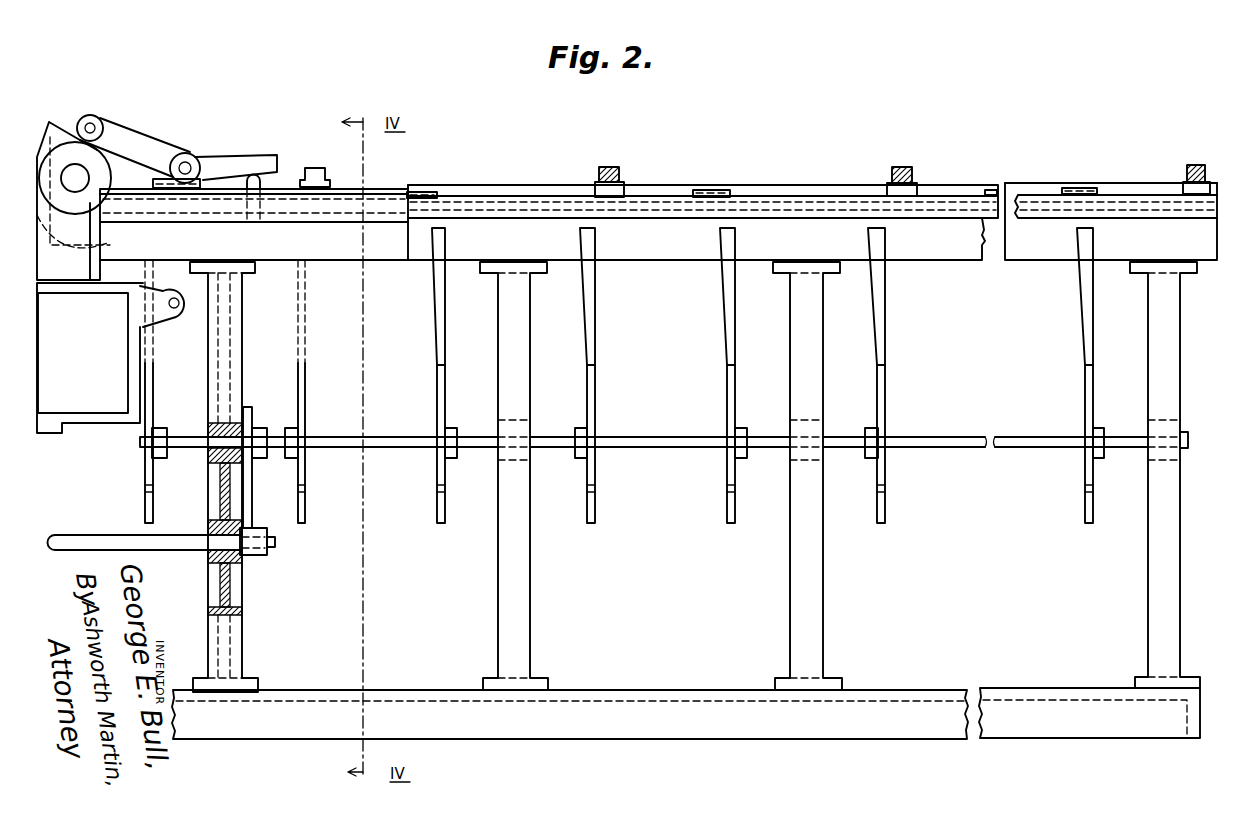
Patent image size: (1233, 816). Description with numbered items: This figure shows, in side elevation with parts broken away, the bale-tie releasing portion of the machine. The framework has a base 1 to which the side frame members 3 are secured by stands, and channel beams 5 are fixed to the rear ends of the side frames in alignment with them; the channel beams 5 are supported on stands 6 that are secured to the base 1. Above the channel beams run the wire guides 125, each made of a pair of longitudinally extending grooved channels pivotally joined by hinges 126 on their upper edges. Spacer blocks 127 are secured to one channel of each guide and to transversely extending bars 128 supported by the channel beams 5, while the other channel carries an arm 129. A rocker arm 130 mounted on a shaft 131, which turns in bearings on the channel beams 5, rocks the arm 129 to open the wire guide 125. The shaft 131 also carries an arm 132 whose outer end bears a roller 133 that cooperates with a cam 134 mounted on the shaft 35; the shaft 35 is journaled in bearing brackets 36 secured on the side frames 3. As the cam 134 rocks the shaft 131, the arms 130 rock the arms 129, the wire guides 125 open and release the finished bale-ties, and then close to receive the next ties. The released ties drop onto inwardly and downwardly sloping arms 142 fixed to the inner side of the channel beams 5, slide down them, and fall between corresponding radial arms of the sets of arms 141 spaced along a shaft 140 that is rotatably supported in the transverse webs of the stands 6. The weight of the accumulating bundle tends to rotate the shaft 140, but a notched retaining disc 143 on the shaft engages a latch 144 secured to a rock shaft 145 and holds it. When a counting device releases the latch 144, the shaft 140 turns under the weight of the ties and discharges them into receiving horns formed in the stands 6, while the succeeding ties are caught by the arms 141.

The base 1 is at (597, 698).
The side frame member 3 is at (88, 405).
The channel beam 5 is at (381, 247).
The stand 6 is at (240, 596).
The shaft 35 is at (78, 177).
The bearing bracket 36 is at (62, 287).
The wire guide 125 is at (481, 198).
The hinge 126 is at (721, 190).
The spacer block 127 is at (620, 187).
The transversely-extending bar 128 is at (609, 167).
The arm 129 is at (262, 180).
The rocker arm 130 is at (244, 158).
The shaft 131 is at (191, 151).
The arm 132 is at (137, 139).
The roller 133 is at (96, 117).
The cam 134 is at (76, 128).
The shaft 140 is at (942, 436).
The radial arm 141 is at (146, 494).
The sloping arm 142 is at (594, 318).
The retaining disc 143 is at (255, 415).
The latch 144 is at (254, 505).
The rock shaft 145 is at (115, 536).